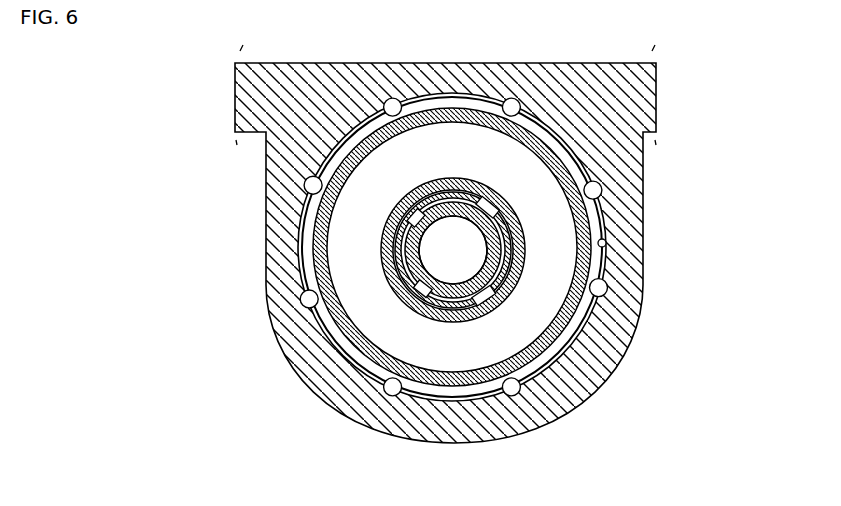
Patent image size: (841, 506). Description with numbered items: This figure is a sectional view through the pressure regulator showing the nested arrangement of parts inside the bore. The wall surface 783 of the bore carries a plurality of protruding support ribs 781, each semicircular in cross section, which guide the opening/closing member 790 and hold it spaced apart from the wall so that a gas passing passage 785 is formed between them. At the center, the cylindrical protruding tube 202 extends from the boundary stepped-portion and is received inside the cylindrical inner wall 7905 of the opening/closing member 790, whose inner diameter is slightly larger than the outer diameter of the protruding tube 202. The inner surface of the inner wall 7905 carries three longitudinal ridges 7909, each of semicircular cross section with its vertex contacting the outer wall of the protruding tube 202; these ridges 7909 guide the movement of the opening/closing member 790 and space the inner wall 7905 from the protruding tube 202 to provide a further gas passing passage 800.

The opening/closing member 790 is at (590, 400).
The gas passing passage 785 is at (600, 274).
The wall surface 783 is at (604, 244).
The protruding support ribs 781 is at (565, 330).
The gas passing passage 800 is at (405, 203).
The ridges 7909 is at (393, 232).
The cylindrical inner wall 7905 is at (392, 277).
The protruding tube 202 is at (427, 285).